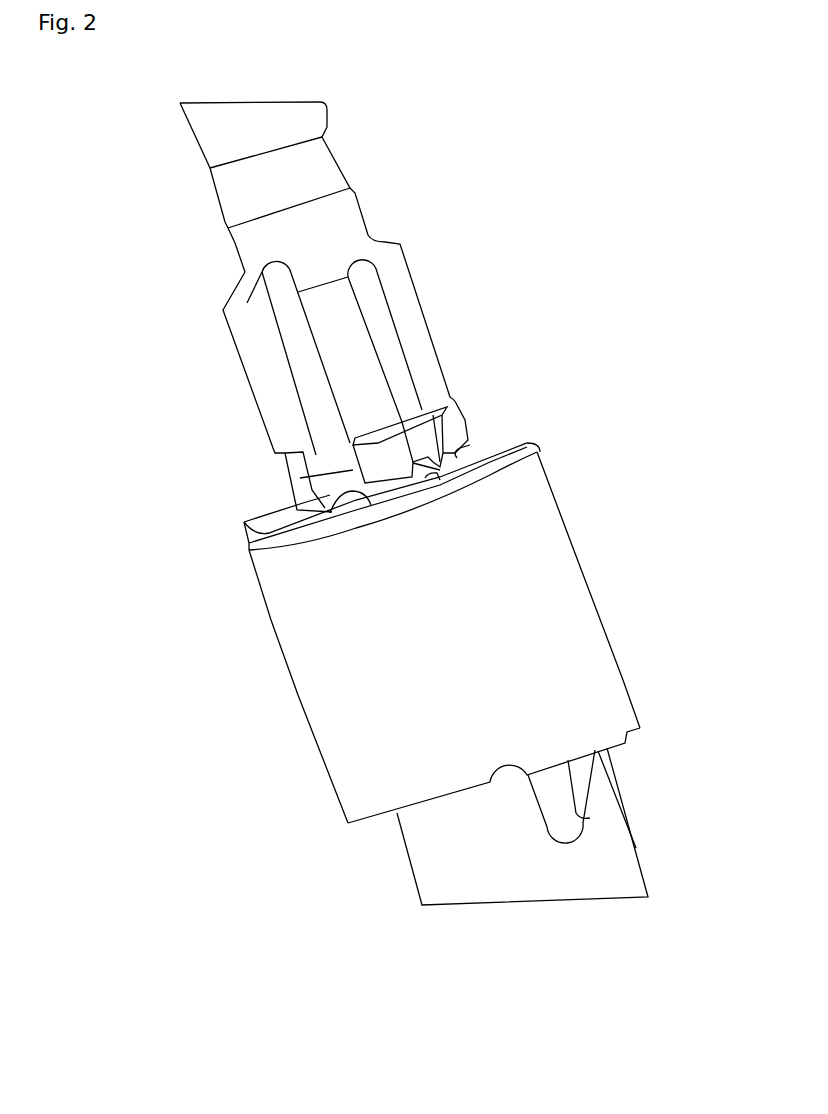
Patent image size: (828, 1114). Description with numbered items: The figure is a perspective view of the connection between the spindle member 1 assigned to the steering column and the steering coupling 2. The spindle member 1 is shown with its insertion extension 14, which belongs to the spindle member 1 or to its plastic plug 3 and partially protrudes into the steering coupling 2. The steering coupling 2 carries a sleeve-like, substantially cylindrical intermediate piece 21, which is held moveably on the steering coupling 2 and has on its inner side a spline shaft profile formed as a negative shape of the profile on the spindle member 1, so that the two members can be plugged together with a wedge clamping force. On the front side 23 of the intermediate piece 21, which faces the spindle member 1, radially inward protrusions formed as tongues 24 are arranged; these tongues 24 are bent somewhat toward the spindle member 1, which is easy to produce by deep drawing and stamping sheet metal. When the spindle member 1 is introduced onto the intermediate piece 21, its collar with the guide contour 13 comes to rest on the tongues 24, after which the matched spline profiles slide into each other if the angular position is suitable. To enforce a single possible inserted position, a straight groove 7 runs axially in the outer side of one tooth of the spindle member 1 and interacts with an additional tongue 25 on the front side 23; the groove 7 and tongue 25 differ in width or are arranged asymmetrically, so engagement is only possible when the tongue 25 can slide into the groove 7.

The spindle member 1 is at (355, 190).
The steering coupling 2 is at (641, 860).
The plastic plug 3 is at (465, 420).
The straight groove 7 is at (382, 330).
The guide contour 13 is at (290, 515).
The insertion extension 14 is at (342, 490).
The intermediate piece 21 is at (560, 582).
The front side 23 is at (517, 447).
The tongues 24 is at (457, 458).
The additional tongue 25 is at (440, 480).